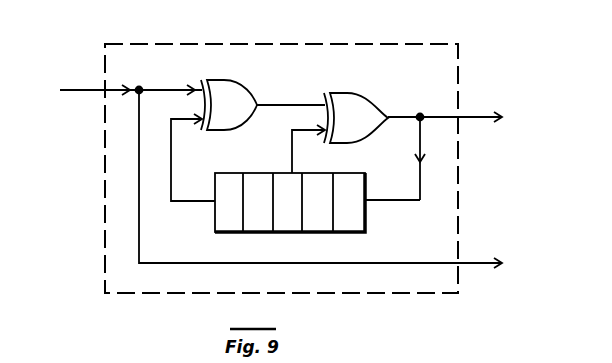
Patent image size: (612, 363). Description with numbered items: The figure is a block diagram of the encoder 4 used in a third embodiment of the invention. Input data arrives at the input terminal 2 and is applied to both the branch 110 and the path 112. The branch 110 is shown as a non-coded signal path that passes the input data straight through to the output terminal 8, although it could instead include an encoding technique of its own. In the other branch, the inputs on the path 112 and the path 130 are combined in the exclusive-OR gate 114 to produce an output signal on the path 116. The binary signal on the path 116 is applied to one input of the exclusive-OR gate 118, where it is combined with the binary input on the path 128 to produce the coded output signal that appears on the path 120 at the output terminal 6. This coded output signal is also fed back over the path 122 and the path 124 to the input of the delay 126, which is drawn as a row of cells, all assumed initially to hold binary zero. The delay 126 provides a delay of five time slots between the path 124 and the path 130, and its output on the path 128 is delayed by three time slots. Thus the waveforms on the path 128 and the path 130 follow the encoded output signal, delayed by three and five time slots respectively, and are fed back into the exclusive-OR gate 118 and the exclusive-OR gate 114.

The input terminal 2 is at (95, 88).
The encoder 4 is at (430, 72).
The output terminal 6 is at (470, 116).
The output terminal 8 is at (470, 262).
The branch 110 is at (212, 262).
The path 112 is at (163, 88).
The exclusive-OR gate 114 is at (207, 82).
The path 116 is at (306, 104).
The exclusive-OR gate 118 is at (343, 94).
The path 120 is at (402, 116).
The path 122 is at (420, 126).
The path 124 is at (386, 202).
The delay 126 is at (312, 234).
The path 128 is at (290, 147).
The path 130 is at (171, 178).